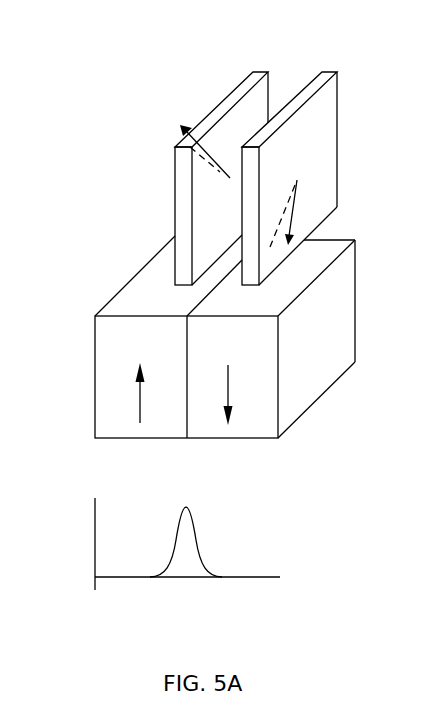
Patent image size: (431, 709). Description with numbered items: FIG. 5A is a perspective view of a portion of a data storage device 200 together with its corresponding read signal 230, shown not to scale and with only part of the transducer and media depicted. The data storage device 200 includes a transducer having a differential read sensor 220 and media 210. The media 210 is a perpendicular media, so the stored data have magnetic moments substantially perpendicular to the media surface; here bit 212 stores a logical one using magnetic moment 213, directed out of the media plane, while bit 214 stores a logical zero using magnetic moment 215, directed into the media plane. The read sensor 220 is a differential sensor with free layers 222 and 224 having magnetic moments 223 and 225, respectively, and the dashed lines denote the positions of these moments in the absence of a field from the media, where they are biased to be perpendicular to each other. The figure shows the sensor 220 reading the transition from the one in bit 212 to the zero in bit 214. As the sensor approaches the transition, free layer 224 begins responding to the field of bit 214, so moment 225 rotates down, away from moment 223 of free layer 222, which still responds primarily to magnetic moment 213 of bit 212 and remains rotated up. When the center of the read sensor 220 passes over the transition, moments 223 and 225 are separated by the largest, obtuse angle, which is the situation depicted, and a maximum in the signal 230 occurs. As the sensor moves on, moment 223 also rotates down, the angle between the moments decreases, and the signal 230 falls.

The data storage device 200 is at (222, 37).
The media 210 is at (79, 329).
The bit 212 is at (139, 340).
The magnetic moment 213 is at (140, 408).
The bit 214 is at (229, 340).
The magnetic moment 215 is at (228, 394).
The differential read sensor 220 is at (84, 162).
The free layer 222 is at (175, 193).
The magnetic moment 223 is at (205, 148).
The free layer 224 is at (338, 163).
The magnetic moment 225 is at (298, 216).
The read signal 230 is at (198, 545).